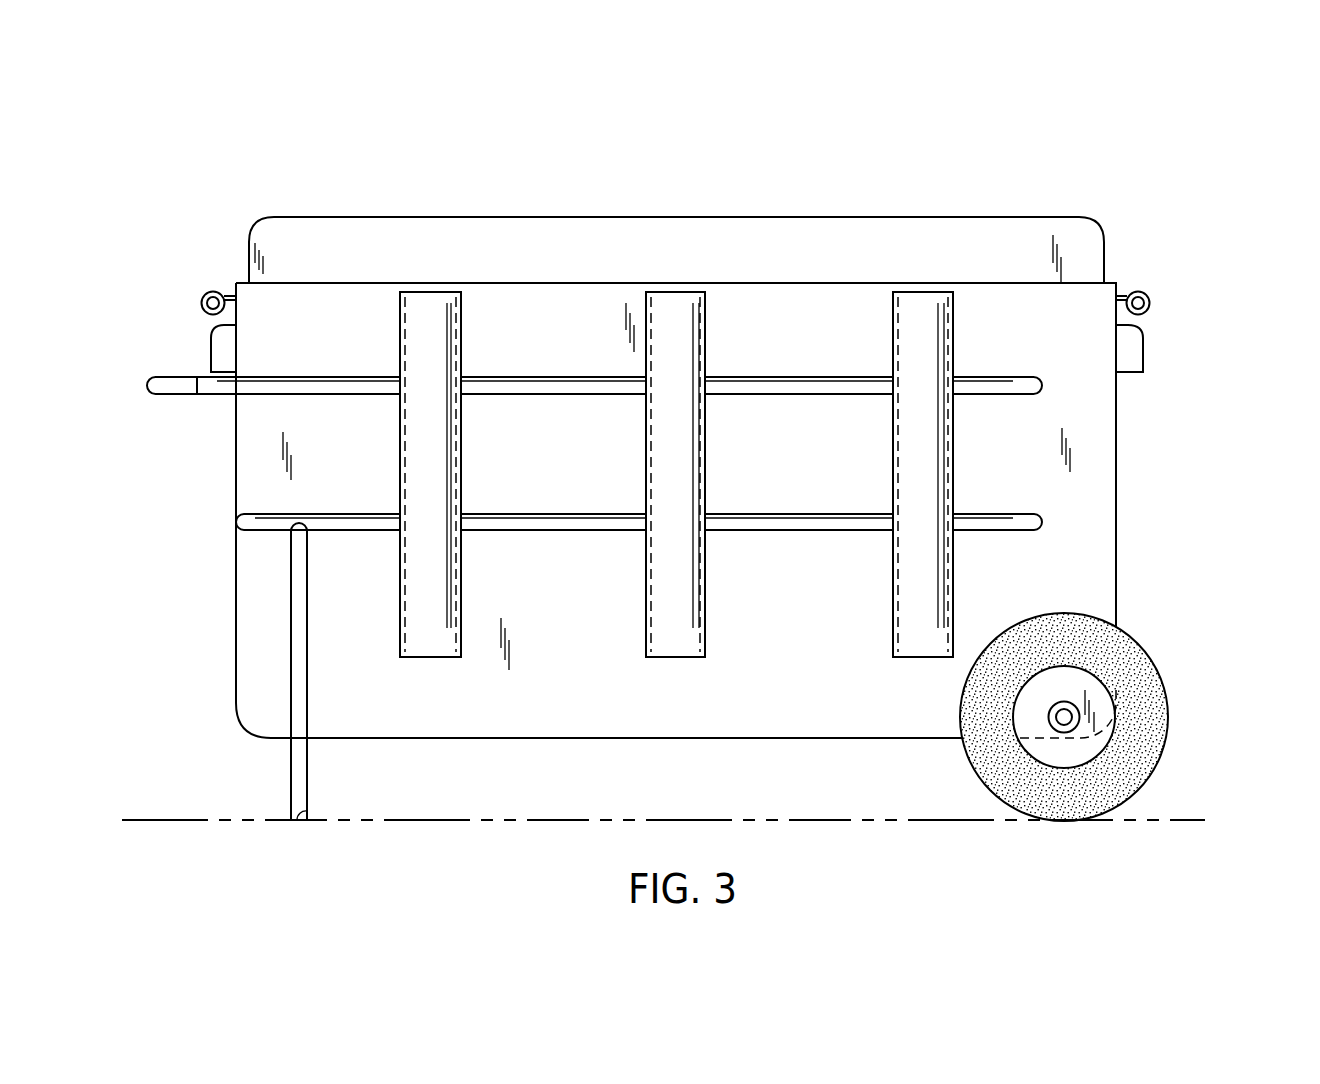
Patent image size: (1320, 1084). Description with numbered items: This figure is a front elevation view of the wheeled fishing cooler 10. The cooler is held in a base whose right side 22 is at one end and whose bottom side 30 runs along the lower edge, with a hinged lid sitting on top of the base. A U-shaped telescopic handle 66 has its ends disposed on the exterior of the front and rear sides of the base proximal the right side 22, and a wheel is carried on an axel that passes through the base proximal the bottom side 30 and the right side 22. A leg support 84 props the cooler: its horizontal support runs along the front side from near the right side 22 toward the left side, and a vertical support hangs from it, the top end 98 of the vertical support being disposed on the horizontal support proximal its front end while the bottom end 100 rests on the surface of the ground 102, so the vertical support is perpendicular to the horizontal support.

The wheeled fishing cooler 10 is at (1168, 181).
The right side 22 is at (1116, 490).
The bottom side 30 is at (745, 738).
The U-shaped telescopic handle 66 is at (165, 388).
The leg support 84 is at (545, 527).
The top end 98 is at (296, 524).
The bottom end 100 is at (300, 818).
The ground 102 is at (200, 821).